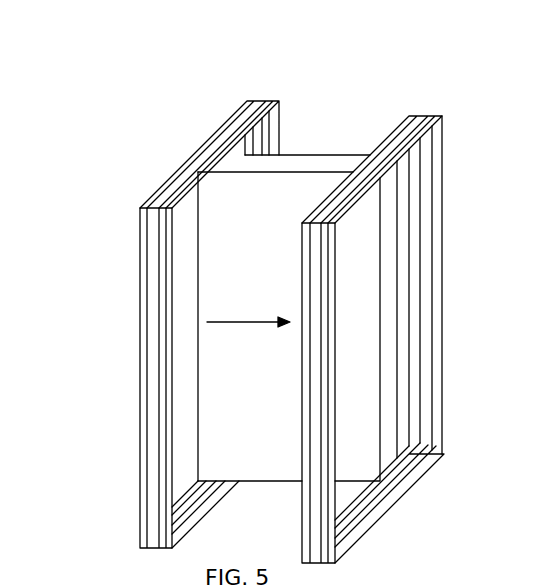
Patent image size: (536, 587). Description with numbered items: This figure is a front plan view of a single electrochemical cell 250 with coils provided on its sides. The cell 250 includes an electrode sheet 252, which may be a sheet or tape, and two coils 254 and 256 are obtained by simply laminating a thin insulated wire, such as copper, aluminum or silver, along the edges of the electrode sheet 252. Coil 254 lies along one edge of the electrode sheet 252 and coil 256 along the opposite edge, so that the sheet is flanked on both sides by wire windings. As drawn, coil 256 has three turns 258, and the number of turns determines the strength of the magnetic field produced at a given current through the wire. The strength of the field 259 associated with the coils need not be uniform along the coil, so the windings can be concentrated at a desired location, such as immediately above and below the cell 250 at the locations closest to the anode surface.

The cell 250 is at (333, 92).
The electrode sheet 252 is at (333, 153).
The coil 254 is at (140, 213).
The coil 256 is at (443, 129).
The turns 258 is at (400, 128).
The field 259 is at (225, 325).